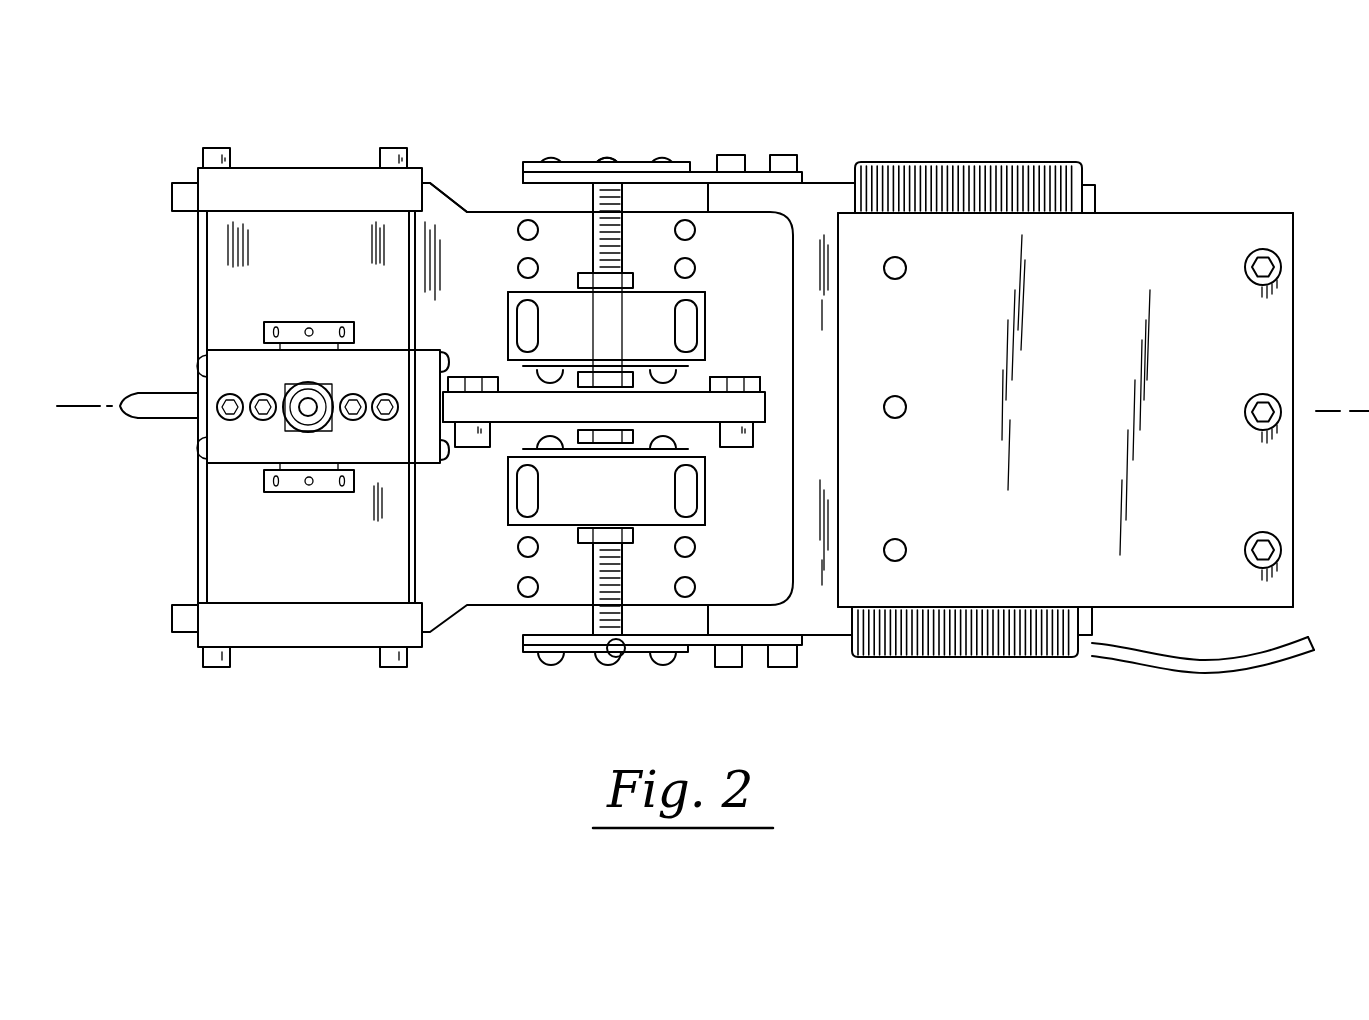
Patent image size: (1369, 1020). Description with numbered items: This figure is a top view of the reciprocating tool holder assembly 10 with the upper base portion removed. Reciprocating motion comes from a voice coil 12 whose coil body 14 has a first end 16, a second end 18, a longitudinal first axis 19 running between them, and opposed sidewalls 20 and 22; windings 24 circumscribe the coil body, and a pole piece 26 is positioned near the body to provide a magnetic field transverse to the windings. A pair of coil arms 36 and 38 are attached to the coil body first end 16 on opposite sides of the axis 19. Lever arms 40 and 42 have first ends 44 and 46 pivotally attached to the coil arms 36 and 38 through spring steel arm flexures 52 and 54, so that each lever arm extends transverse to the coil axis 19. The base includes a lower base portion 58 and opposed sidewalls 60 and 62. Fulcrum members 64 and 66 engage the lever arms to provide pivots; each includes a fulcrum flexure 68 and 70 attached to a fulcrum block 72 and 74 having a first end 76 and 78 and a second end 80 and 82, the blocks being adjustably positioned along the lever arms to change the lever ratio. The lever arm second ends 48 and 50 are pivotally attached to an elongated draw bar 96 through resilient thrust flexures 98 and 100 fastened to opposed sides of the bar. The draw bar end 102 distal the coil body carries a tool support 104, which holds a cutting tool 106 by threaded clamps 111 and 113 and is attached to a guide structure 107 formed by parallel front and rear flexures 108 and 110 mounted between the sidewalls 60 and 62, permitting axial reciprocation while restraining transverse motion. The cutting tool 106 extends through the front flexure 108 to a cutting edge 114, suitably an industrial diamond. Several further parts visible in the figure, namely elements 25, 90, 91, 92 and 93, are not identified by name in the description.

The reciprocating tool holder assembly 10 is at (1008, 700).
The voice coil 12 is at (1082, 172).
The coil body 14 is at (818, 180).
The first end 16 is at (795, 358).
The second end 18 is at (1097, 200).
The longitudinal first axis 19 is at (1365, 422).
The sidewall 20 is at (830, 640).
The sidewall 22 is at (840, 183).
The windings 24 is at (952, 165).
The power cable 25 is at (1280, 664).
The pole piece 26 is at (1290, 335).
The coil arm 36 is at (700, 172).
The coil arm 38 is at (700, 652).
The lever arm 40 is at (596, 233).
The lever arm 42 is at (593, 562).
The lever arm first end 44 is at (635, 158).
The lever arm first end 46 is at (625, 650).
The lever arm second end 48 is at (605, 385).
The lever arm second end 50 is at (606, 479).
The arm flexure 52 is at (573, 160).
The arm flexure 54 is at (575, 655).
The lower base portion 58 is at (462, 205).
The sidewall 60 is at (318, 168).
The sidewall 62 is at (270, 648).
The fulcrum member 64 is at (710, 302).
The fulcrum member 66 is at (707, 512).
The fulcrum flexure 68 is at (700, 372).
The fulcrum flexure 70 is at (700, 450).
The fulcrum block 72 is at (705, 348).
The fulcrum block 74 is at (704, 500).
The fulcrum block first end 76 is at (688, 290).
The fulcrum block first end 78 is at (510, 524).
The fulcrum block second end 80 is at (512, 372).
The fulcrum block second end 82 is at (498, 447).
The upper lock nut 90 is at (563, 377).
The lower lock nut 91 is at (640, 458).
The upper jam nut 92 is at (578, 283).
The lower jam nut 93 is at (634, 538).
The draw bar 96 is at (765, 424).
The thrust flexure 98 is at (515, 372).
The thrust flexure 100 is at (518, 490).
The draw bar end 102 is at (435, 360).
The tool support 104 is at (243, 463).
The cutting tool 106 is at (168, 422).
The guide structure 107 is at (220, 307).
The front flexure 108 is at (210, 552).
The rear flexure 110 is at (409, 548).
The threaded clamp 111 is at (283, 322).
The threaded clamp 113 is at (300, 385).
The cutting edge 114 is at (120, 400).